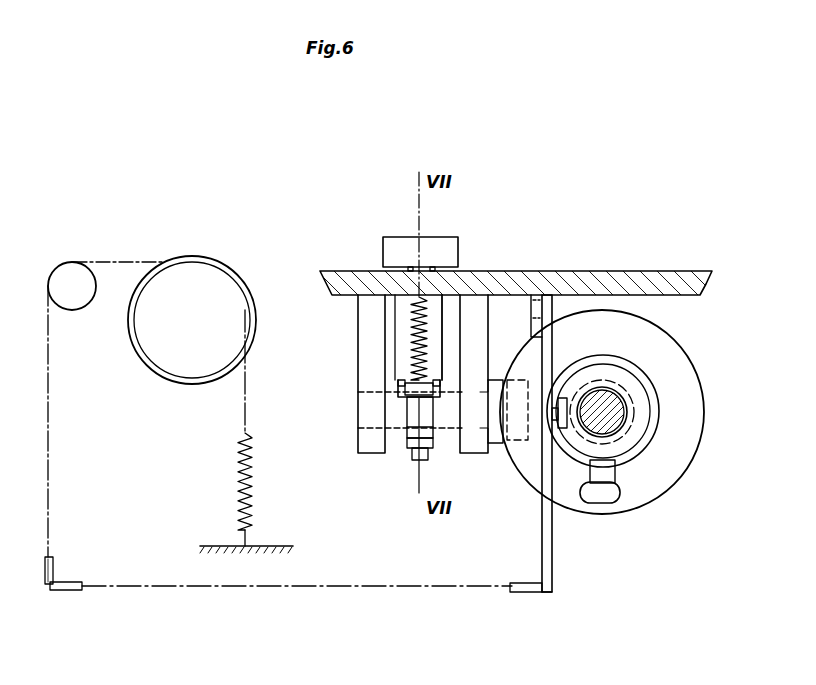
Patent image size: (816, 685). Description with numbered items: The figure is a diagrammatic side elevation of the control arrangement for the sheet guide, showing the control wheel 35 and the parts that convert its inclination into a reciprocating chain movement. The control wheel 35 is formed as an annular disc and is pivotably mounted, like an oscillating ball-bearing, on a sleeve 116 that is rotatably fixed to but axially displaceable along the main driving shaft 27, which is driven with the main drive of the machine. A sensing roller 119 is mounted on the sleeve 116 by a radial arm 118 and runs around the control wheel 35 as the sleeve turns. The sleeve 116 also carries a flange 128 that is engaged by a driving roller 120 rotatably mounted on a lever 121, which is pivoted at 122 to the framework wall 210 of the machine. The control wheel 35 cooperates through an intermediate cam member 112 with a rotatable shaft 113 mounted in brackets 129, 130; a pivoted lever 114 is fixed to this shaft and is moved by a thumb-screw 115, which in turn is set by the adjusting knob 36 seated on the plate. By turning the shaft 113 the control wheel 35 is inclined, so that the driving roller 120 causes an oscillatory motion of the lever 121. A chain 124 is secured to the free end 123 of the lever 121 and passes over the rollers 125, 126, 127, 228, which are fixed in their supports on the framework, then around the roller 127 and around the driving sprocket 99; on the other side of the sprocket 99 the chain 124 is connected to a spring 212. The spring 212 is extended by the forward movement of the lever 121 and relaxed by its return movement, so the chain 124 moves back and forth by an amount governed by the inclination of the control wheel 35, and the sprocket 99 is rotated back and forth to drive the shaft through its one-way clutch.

The main driving shaft 27 is at (613, 403).
The control wheel 35 is at (667, 358).
The adjusting knob 36 is at (395, 244).
The driving sprocket 99 is at (182, 256).
The intermediate cam member 112 is at (497, 387).
The rotatable shaft 113 is at (443, 425).
The pivoted lever 114 is at (418, 448).
The thumb-screw 115 is at (435, 358).
The sleeve 116 is at (620, 437).
The radial arm 118 is at (605, 480).
The sensing roller 119 is at (605, 500).
The driving roller 120 is at (563, 400).
The lever 121 is at (548, 493).
The pivot 122 is at (547, 310).
The free end 123 is at (546, 593).
The chain 124 is at (146, 588).
The roller 125 is at (535, 592).
The roller 126 is at (60, 591).
The roller 127 is at (77, 272).
The flange 128 is at (642, 432).
The bracket 129 is at (475, 453).
The bracket 130 is at (370, 451).
The framework wall 210 is at (686, 294).
The spring 212 is at (240, 497).
The roller 228 is at (56, 559).